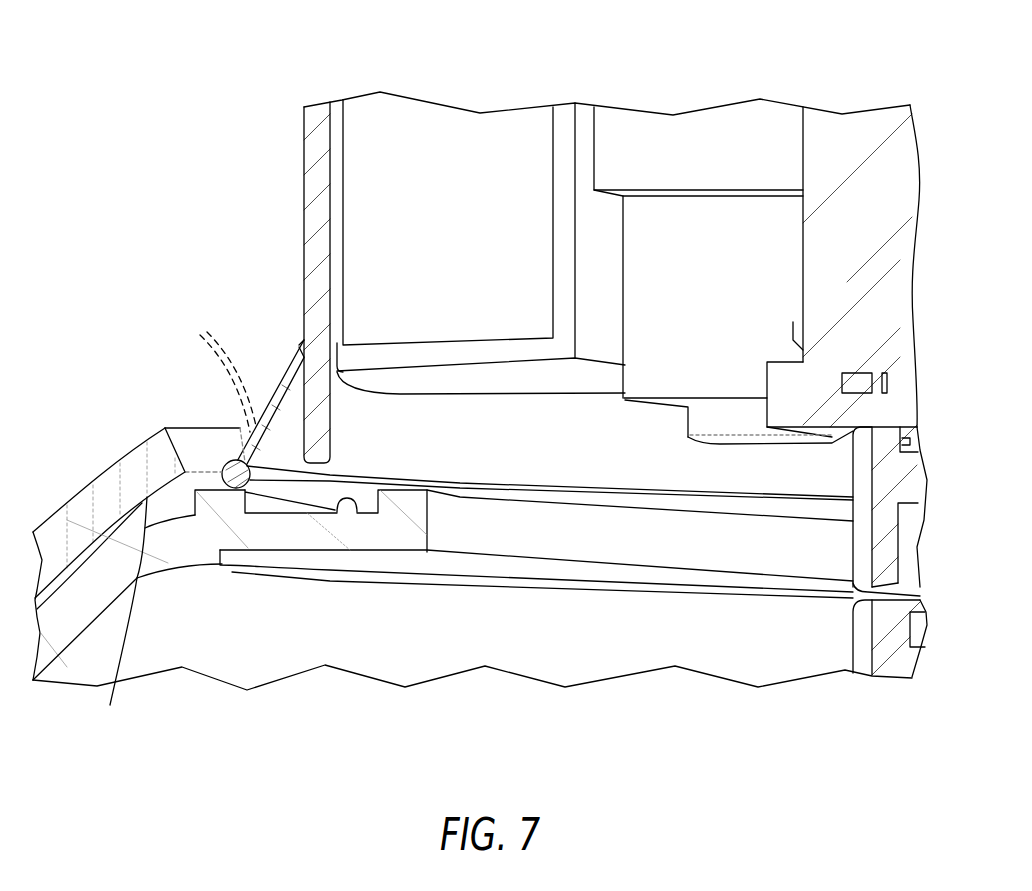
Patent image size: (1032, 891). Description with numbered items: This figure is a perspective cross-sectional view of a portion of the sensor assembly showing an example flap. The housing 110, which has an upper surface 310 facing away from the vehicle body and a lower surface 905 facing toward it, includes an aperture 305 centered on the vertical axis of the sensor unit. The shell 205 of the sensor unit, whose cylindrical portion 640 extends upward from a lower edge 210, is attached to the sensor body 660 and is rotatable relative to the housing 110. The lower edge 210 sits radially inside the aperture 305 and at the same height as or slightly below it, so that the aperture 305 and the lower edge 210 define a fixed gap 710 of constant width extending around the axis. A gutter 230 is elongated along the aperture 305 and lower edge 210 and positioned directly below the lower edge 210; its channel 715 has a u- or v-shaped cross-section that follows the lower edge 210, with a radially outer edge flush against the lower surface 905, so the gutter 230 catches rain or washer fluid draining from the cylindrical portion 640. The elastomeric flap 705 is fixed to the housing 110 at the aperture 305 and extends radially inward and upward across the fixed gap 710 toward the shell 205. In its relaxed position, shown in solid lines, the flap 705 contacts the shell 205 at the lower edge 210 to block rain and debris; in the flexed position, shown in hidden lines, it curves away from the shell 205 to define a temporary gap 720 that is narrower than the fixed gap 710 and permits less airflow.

The shell 205 is at (300, 118).
The cylindrical portion 640 is at (304, 160).
The temporary gap 720 is at (293, 345).
The flap 705 is at (287, 398).
The fixed gap 710 is at (287, 466).
The aperture 305 is at (192, 450).
The upper surface 310 is at (127, 445).
The housing 110 is at (108, 503).
The lower edge 210 is at (324, 480).
The sensor body 660 is at (672, 385).
The channel 715 is at (357, 512).
The lower surface 905 is at (117, 622).
The gutter 230 is at (240, 628).